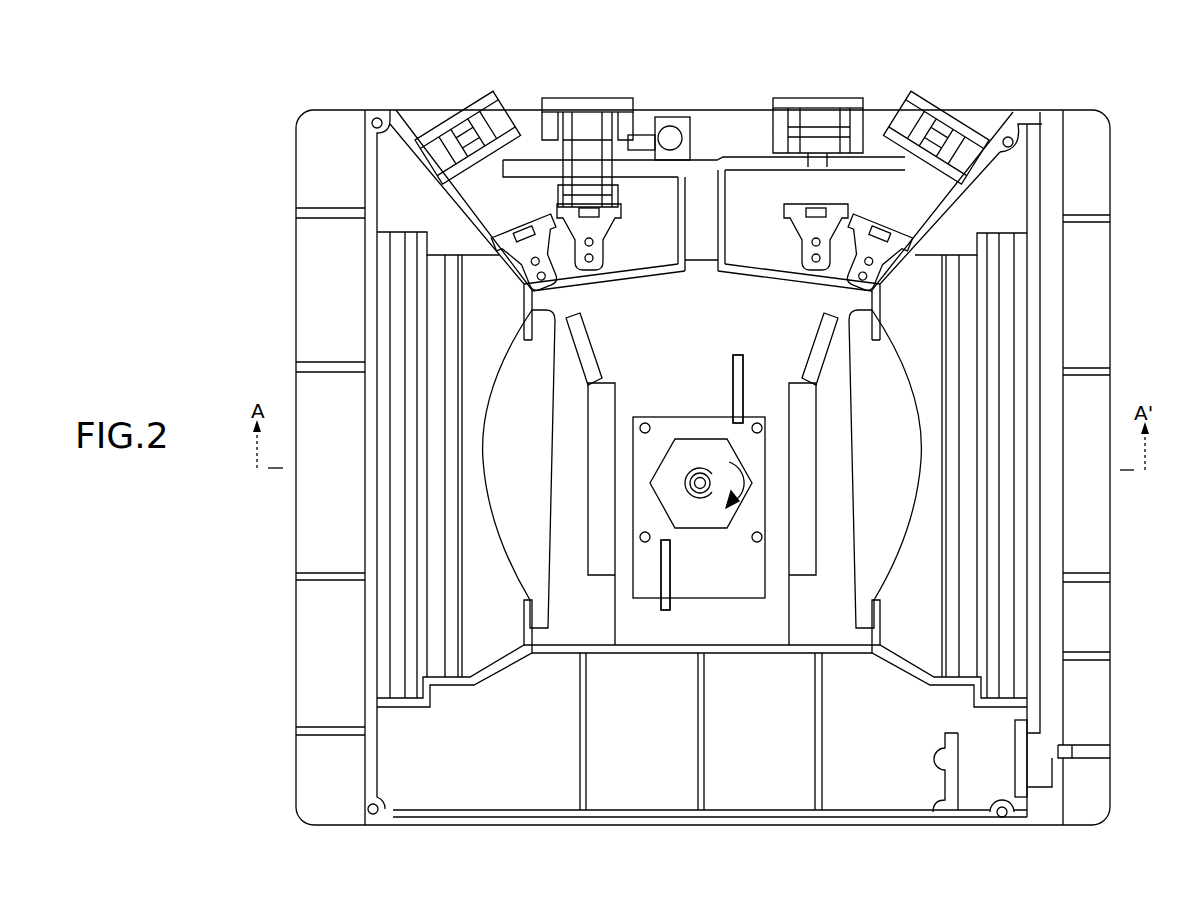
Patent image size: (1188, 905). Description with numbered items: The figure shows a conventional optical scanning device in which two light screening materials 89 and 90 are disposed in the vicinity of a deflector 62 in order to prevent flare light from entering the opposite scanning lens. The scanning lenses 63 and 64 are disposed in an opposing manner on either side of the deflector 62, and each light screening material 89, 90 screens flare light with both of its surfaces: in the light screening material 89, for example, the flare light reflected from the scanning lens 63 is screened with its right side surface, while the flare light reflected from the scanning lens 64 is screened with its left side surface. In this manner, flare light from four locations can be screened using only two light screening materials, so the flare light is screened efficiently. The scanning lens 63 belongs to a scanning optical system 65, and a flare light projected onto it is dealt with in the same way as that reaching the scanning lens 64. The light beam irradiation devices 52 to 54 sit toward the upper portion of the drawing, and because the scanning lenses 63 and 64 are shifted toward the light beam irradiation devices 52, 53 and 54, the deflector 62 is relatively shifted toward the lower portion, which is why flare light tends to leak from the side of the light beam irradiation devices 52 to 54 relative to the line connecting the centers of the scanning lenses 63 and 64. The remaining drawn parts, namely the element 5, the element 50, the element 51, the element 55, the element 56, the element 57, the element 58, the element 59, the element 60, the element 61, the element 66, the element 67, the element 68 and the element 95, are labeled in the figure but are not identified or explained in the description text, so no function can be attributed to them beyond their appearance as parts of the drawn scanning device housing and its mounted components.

The optical unit 5 is at (372, 37).
The frame 50 is at (1110, 290).
The bottom plate 51 is at (740, 802).
The light beam irradiation device 52 is at (941, 137).
The light beam irradiation device 53 is at (820, 118).
The light beam irradiation device 54 is at (587, 118).
The adjustment module 55 is at (465, 132).
The holding bracket 56 is at (893, 228).
The holding bracket 57 is at (818, 212).
The holding bracket 58 is at (588, 212).
The holding bracket 59 is at (517, 228).
The guide pin 60 is at (820, 345).
The guide pin 61 is at (583, 345).
The deflector 62 is at (743, 498).
The scanning lens 63 is at (868, 462).
The scanning lens 64 is at (535, 460).
The scanning optical system 65 is at (960, 667).
The rib 66 is at (438, 670).
The rib 67 is at (1000, 695).
The rib 68 is at (397, 693).
The light screening material 89 is at (733, 367).
The light screening material 90 is at (668, 602).
The pin 95 is at (733, 407).